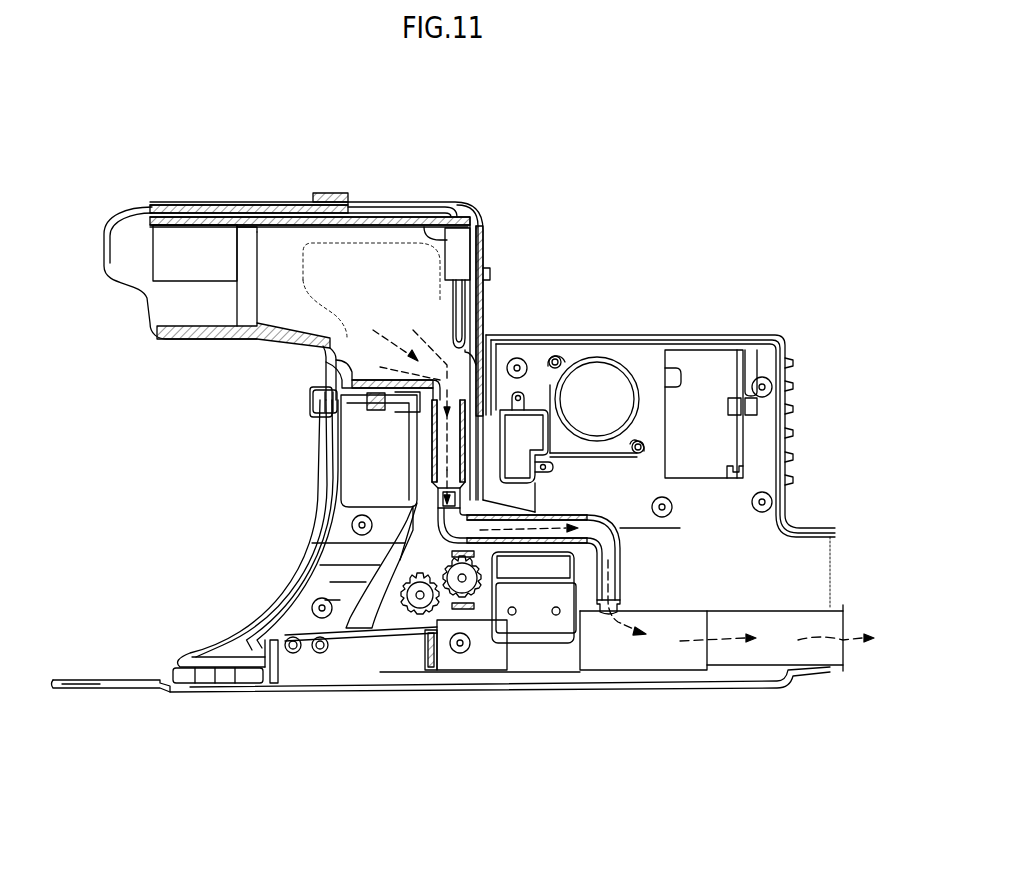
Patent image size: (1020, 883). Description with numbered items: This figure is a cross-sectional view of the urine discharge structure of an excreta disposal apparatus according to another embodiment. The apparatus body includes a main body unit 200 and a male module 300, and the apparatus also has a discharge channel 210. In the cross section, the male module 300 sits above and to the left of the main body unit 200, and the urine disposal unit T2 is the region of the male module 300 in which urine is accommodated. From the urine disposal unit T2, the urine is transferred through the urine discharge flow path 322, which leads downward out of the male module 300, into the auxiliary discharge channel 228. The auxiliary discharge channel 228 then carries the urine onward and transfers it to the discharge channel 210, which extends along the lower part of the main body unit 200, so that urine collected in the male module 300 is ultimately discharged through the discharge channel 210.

The male module 300 is at (548, 188).
The main body unit 200 is at (682, 320).
The urine discharge flow path 322 is at (455, 400).
The auxiliary discharge channel 228 is at (607, 553).
The discharge channel 210 is at (641, 660).
The urine disposal unit T2 is at (337, 286).